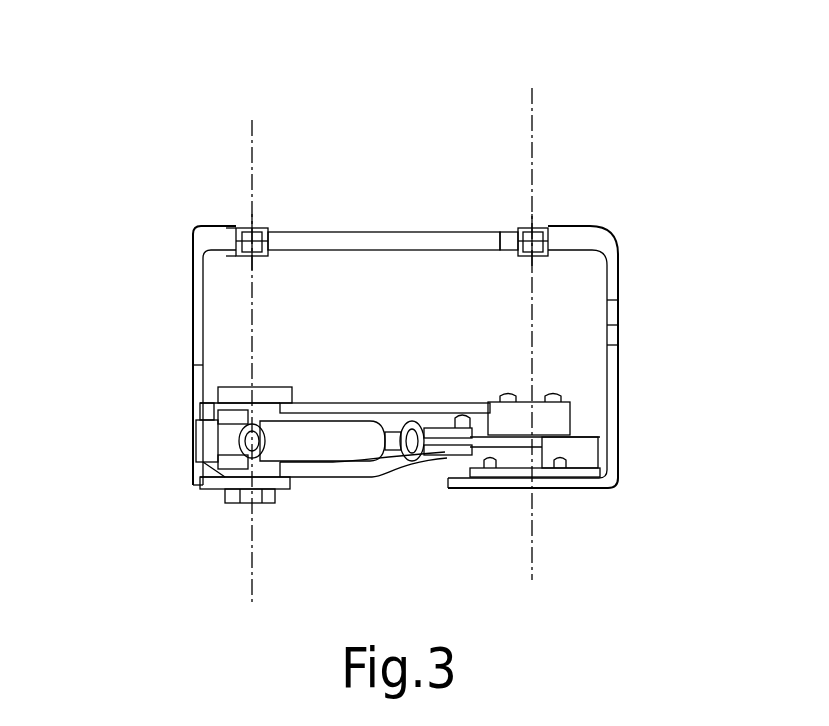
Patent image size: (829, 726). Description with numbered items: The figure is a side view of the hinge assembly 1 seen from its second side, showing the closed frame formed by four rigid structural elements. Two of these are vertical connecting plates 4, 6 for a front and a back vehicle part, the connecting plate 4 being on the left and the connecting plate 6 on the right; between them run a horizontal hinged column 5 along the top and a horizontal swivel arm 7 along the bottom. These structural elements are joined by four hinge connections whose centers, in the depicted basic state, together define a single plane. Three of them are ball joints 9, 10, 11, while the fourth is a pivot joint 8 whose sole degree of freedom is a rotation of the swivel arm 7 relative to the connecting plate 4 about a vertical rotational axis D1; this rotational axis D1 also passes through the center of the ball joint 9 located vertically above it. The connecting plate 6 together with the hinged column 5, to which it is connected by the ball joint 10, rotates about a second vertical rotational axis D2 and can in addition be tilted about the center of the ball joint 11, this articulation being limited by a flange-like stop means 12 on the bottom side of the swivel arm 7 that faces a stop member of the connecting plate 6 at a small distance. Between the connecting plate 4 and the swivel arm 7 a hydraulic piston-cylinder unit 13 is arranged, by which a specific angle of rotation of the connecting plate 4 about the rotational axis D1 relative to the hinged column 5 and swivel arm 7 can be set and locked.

The hinge assembly 1 is at (453, 152).
The connecting plate 4 is at (195, 332).
The hinged column 5 is at (346, 238).
The connecting plate 6 is at (612, 343).
The swivel arm 7 is at (393, 462).
The pivot joint 8 is at (214, 500).
The ball joint 9 is at (240, 222).
The ball joint 10 is at (545, 224).
The ball joint 11 is at (548, 440).
The stop means 12 is at (525, 478).
The hydraulic piston-cylinder unit 13 is at (345, 437).
The rotational axis D1 is at (244, 582).
The rotational axis D2 is at (541, 99).